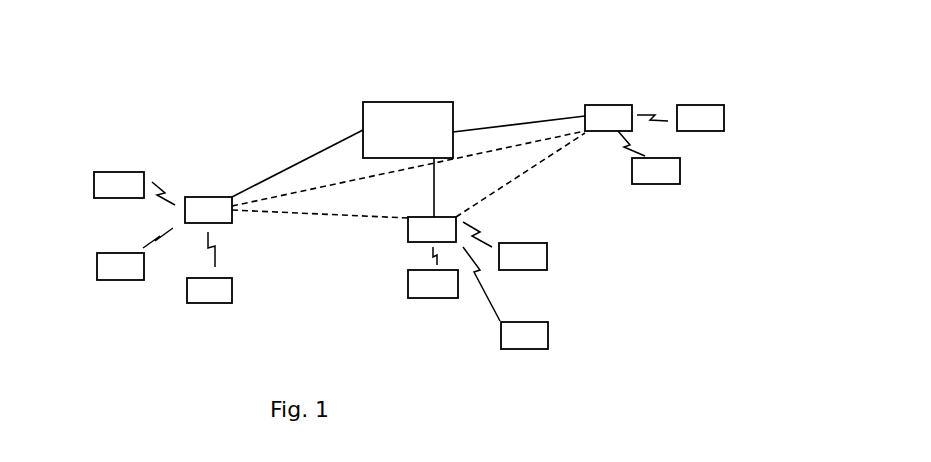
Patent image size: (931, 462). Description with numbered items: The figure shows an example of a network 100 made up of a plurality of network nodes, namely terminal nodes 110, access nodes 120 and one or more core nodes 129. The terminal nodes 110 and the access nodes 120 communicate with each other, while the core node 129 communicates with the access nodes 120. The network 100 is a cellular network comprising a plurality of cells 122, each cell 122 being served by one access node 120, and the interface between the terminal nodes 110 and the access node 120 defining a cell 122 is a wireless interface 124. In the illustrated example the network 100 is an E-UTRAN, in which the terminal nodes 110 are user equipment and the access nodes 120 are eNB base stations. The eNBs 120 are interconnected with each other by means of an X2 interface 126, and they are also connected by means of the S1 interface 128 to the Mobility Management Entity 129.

The network 100 is at (588, 70).
The terminal node 110 is at (110, 172).
The access node 120 is at (210, 197).
The cell 122 is at (163, 292).
The wireless interface 124 is at (163, 180).
The X2 interface 126 is at (348, 184).
The S1 interface 128 is at (290, 167).
The core node 129 is at (410, 102).